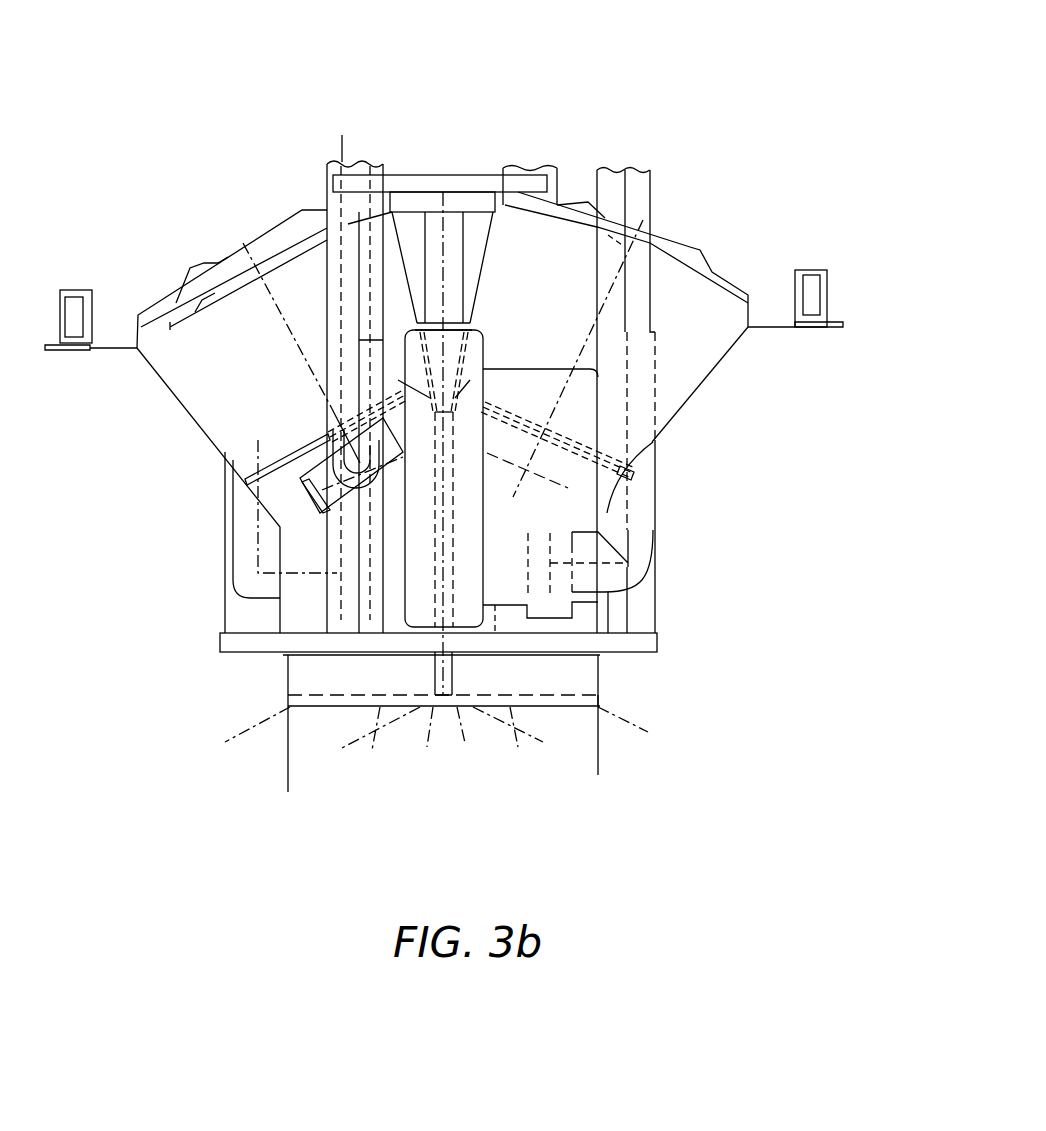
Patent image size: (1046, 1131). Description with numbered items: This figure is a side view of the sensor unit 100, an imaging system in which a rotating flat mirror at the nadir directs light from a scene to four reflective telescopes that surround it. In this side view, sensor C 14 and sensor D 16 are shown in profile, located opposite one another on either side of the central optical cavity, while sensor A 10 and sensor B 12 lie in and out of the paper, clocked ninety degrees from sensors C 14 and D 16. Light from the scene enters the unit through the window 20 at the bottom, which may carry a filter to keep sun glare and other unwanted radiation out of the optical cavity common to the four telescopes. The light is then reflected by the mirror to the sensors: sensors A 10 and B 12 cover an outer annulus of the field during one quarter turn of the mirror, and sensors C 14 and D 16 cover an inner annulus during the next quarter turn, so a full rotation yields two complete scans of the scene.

The sensor unit 100 is at (444, 406).
The sensor C 14 is at (212, 327).
The sensor D 16 is at (672, 297).
The sensor A 10 is at (418, 548).
The sensor B 12 is at (465, 527).
The window 20 is at (598, 697).